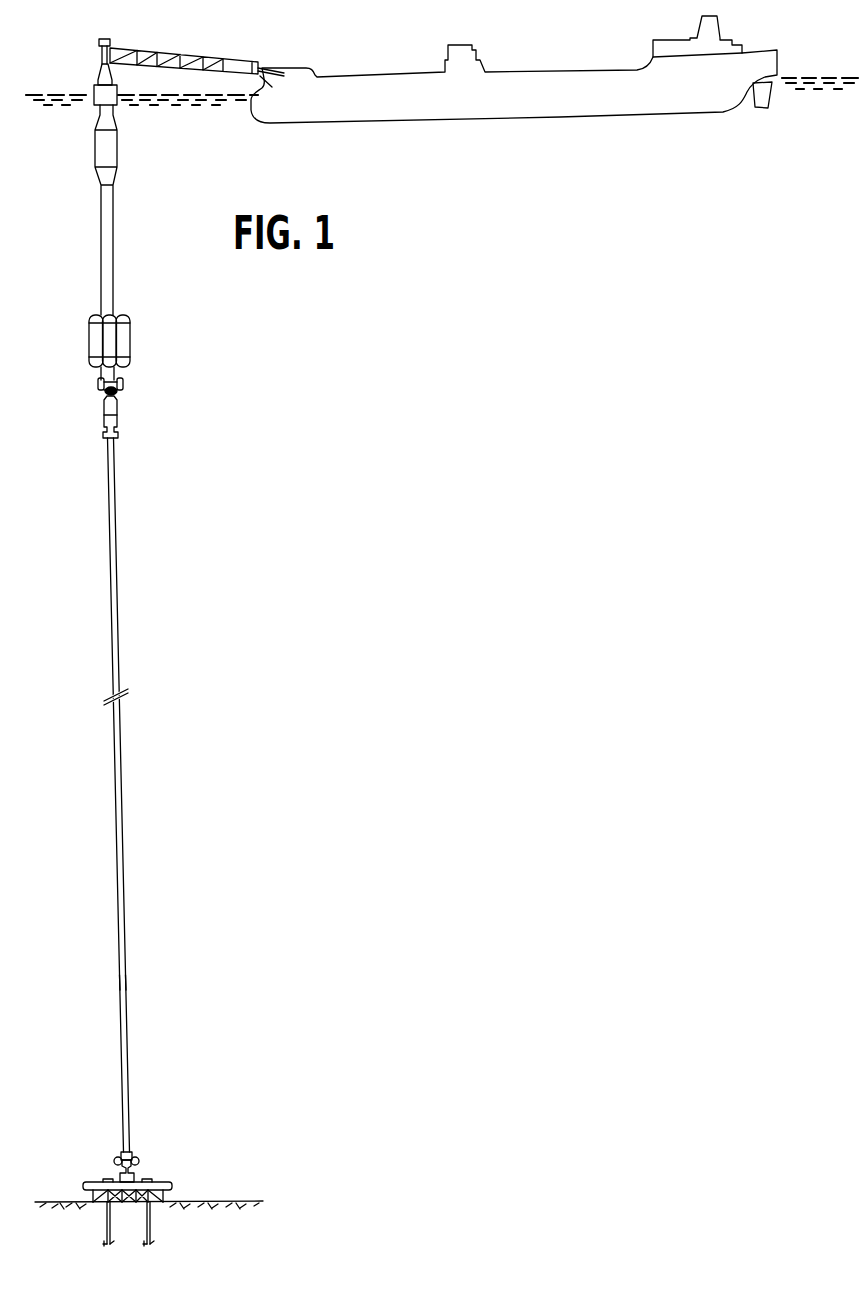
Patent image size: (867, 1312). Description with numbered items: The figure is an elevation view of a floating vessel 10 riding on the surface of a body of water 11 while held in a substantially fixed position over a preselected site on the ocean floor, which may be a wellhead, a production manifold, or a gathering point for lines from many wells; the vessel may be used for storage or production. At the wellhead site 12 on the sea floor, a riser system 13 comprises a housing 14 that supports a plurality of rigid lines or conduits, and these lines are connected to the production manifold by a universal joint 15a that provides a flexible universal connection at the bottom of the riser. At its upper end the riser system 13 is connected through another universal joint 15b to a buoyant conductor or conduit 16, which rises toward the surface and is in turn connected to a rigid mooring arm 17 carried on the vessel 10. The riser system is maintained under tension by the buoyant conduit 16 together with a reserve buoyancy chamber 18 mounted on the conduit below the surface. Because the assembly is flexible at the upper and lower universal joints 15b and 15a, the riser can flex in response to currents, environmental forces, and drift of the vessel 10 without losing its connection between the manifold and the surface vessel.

The vessel 10 is at (485, 110).
The body of water 11 is at (290, 172).
The wellhead site 12 is at (178, 1186).
The riser system 13 is at (126, 791).
The housing 14 is at (125, 984).
The universal joint 15a is at (126, 1159).
The universal joint 15b is at (117, 397).
The buoyant conduit 16 is at (100, 235).
The rigid mooring arm 17 is at (173, 53).
The reserve buoyancy chamber 18 is at (130, 338).